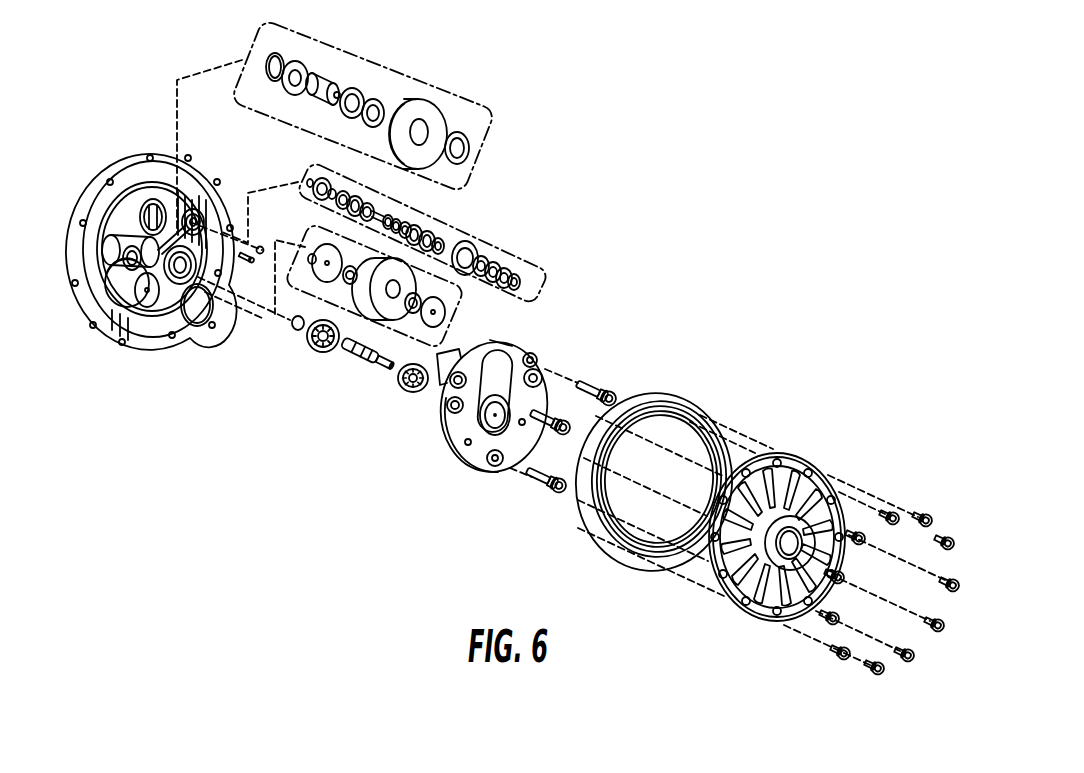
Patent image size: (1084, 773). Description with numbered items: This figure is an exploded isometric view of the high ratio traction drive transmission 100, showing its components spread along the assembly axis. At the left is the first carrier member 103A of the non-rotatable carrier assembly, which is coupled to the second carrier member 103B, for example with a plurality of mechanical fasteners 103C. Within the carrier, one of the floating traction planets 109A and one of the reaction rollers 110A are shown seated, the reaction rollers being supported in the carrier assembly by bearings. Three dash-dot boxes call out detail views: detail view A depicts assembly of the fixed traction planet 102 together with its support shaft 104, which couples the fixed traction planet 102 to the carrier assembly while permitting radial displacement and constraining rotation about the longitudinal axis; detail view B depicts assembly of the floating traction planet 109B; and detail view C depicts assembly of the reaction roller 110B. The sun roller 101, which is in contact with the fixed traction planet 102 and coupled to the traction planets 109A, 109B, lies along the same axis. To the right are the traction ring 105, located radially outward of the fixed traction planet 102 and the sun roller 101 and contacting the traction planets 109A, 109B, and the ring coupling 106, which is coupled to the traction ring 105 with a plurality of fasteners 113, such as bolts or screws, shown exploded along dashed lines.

The high ratio traction drive transmission 100 is at (121, 84).
The sun roller 101 is at (374, 364).
The fixed traction planet 102 is at (432, 100).
The first carrier member 103A is at (82, 312).
The second carrier member 103B is at (446, 450).
The mechanical fasteners 103C is at (538, 486).
The support shaft 104 is at (337, 80).
The traction ring 105 is at (665, 392).
The ring coupling 106 is at (800, 452).
The traction planet 109A is at (178, 305).
The traction planet 109B is at (346, 343).
The reaction roller 110A is at (114, 225).
The reaction roller 110B is at (470, 241).
The fasteners 113 is at (892, 514).
The detail view A is at (496, 130).
The detail view B is at (468, 307).
The detail view C is at (560, 268).